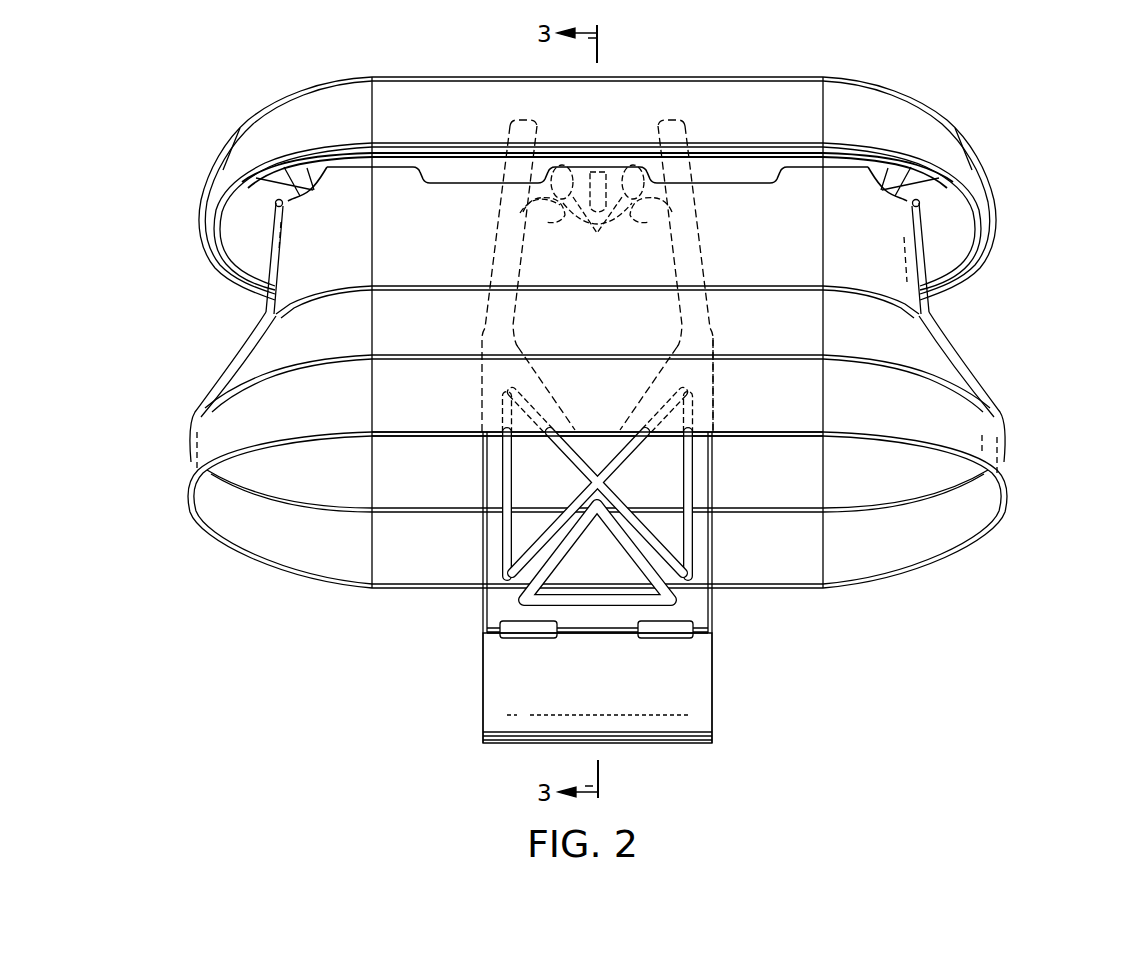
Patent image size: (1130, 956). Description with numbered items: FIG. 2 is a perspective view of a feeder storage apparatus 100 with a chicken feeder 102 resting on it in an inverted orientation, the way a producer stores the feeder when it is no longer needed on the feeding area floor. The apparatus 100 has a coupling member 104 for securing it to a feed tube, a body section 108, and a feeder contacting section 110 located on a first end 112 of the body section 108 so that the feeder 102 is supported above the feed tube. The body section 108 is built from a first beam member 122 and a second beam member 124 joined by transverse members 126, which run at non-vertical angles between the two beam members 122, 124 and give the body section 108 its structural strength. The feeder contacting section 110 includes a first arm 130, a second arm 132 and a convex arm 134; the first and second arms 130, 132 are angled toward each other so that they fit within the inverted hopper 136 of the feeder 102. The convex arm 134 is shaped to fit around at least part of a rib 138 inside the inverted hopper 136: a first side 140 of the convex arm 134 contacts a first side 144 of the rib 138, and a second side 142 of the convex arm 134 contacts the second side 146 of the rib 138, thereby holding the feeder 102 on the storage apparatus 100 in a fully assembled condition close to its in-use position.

The feeder storage apparatus 100 is at (458, 622).
The chicken feeder 102 is at (646, 332).
The coupling member 104 is at (714, 688).
The body section 108 is at (726, 550).
The feeder contacting section 110 is at (722, 219).
The first end 112 is at (724, 378).
The first beam member 122 is at (482, 462).
The second beam member 124 is at (712, 460).
The transverse members 126 is at (462, 549).
The first arm 130 is at (497, 265).
The second arm 132 is at (700, 265).
The convex arm 134 is at (520, 212).
The hopper 136 is at (236, 367).
The rib 138 is at (598, 172).
The first side of the convex arm 140 is at (553, 163).
The second side of the convex arm 142 is at (633, 163).
The first side of the rib 144 is at (565, 225).
The second side of the rib 146 is at (617, 222).